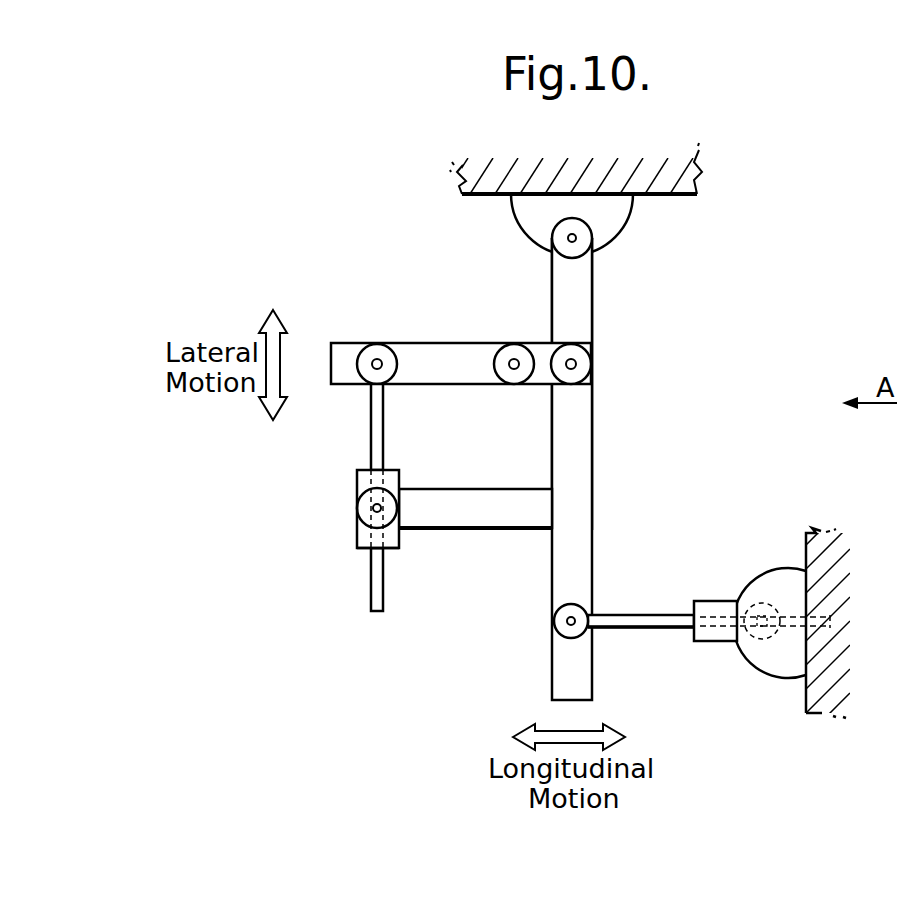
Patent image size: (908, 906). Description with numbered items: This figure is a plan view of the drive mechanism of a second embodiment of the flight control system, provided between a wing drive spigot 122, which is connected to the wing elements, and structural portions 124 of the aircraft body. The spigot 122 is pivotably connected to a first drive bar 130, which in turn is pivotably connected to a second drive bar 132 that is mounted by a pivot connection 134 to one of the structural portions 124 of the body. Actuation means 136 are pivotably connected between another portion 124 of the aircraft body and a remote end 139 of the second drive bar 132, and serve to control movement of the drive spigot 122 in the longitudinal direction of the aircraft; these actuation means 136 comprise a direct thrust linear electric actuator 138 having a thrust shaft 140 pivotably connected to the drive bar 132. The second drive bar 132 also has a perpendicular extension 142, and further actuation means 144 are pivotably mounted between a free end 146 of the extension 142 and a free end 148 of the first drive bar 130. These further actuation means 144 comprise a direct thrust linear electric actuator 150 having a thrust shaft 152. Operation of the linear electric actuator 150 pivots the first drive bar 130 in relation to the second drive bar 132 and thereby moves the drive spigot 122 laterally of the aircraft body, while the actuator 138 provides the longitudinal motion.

The wing drive spigot 122 is at (512, 349).
The portions of the aircraft body 124 is at (462, 188).
The first drive bar 130 is at (448, 356).
The second drive bar 132 is at (594, 303).
The pivot connection 134 is at (607, 217).
The actuation means 136 is at (711, 573).
The direct thrust linear electric actuator 138 is at (718, 642).
The remote end of the second drive bar 139 is at (563, 660).
The thrust shaft 140 is at (641, 615).
The perpendicular extension 142 is at (484, 505).
The further actuation means 144 is at (344, 480).
The free end of the extension 146 is at (398, 516).
The free end of the first drive bar 148 is at (345, 348).
The direct thrust linear electric actuator 150 is at (358, 534).
The thrust shaft 152 is at (372, 440).